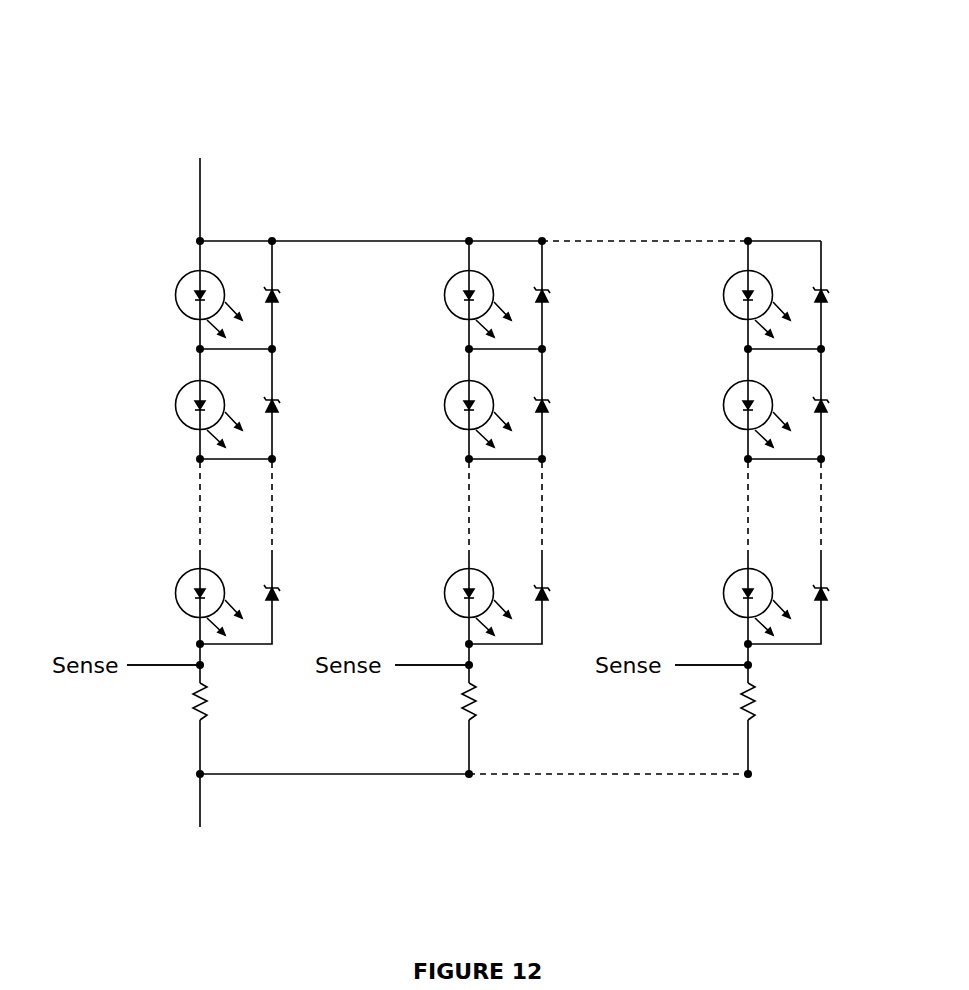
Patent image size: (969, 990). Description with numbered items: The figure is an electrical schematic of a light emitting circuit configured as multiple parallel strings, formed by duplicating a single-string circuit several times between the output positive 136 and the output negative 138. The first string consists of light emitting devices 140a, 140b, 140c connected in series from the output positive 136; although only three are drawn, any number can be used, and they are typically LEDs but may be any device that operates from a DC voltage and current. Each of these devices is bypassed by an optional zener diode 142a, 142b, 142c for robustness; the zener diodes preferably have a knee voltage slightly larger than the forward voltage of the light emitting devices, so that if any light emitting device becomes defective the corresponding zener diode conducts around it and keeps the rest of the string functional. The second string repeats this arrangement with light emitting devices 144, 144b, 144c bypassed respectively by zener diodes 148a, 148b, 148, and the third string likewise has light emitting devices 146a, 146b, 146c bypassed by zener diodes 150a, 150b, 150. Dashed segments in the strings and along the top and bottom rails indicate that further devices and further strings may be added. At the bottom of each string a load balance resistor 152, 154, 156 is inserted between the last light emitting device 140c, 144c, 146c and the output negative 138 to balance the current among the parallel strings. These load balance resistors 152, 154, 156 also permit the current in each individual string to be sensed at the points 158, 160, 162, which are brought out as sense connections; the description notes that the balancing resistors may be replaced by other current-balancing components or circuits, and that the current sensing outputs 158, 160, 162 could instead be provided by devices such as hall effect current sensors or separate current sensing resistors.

The output positive 136 is at (166, 102).
The output negative 138 is at (170, 884).
The light emitting device 140a is at (165, 298).
The light emitting device 140b is at (165, 408).
The light emitting device 140c is at (165, 596).
The zener diode 142a is at (288, 300).
The zener diode 142b is at (288, 410).
The zener diode 142c is at (288, 598).
The light emitting device 144 is at (434, 298).
The light emitting device 144b is at (434, 406).
The light emitting device 144c is at (434, 596).
The zener diode 148a is at (558, 300).
The zener diode 148b is at (558, 409).
The zener diode 148 is at (558, 598).
The light emitting device 146a is at (713, 298).
The light emitting device 146b is at (713, 406).
The light emitting device 146c is at (713, 596).
The zener diode 150a is at (862, 309).
The zener diode 150b is at (862, 418).
The zener diode 150 is at (862, 607).
The load balance resistor 152 is at (187, 707).
The load balance resistor 154 is at (455, 707).
The load balance resistor 156 is at (735, 707).
The current sensing point 158 is at (62, 679).
The current sensing point 160 is at (330, 679).
The current sensing point 162 is at (610, 679).